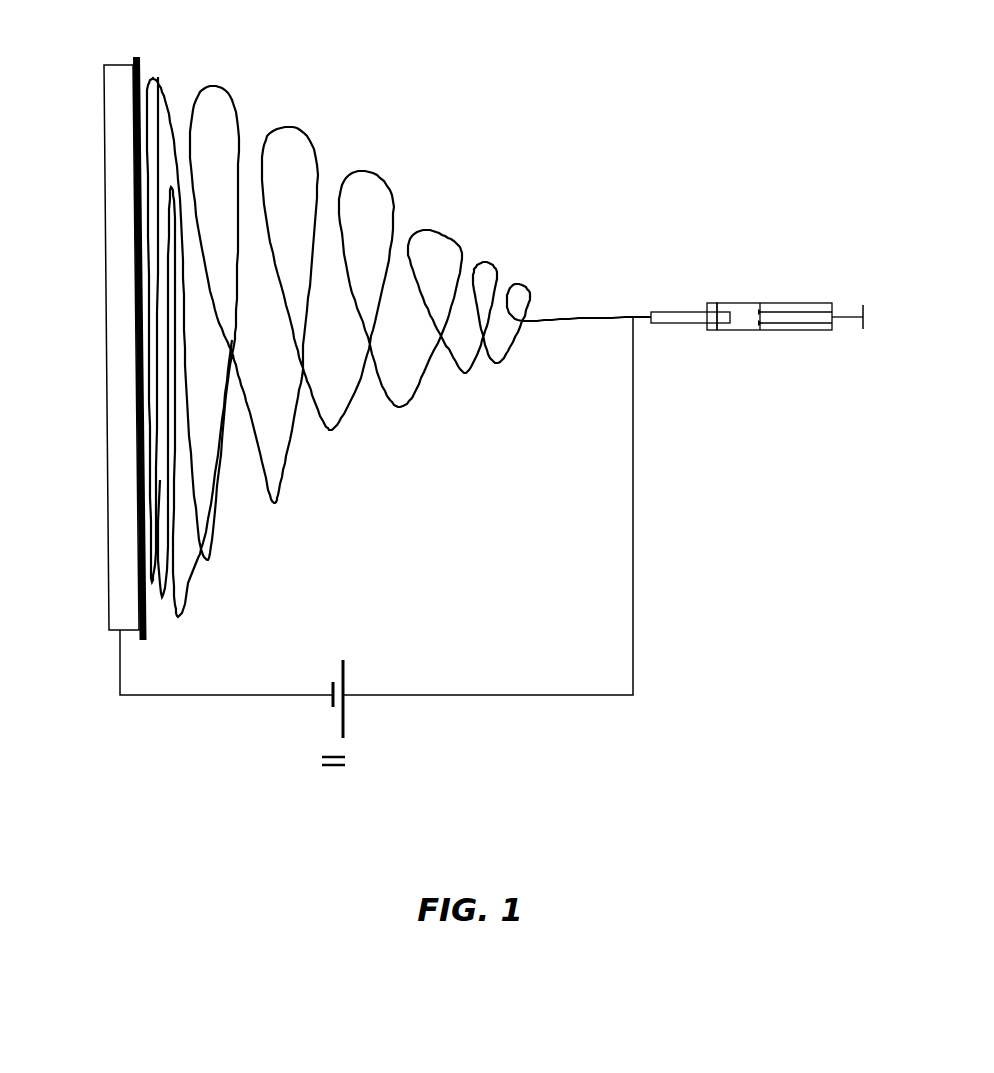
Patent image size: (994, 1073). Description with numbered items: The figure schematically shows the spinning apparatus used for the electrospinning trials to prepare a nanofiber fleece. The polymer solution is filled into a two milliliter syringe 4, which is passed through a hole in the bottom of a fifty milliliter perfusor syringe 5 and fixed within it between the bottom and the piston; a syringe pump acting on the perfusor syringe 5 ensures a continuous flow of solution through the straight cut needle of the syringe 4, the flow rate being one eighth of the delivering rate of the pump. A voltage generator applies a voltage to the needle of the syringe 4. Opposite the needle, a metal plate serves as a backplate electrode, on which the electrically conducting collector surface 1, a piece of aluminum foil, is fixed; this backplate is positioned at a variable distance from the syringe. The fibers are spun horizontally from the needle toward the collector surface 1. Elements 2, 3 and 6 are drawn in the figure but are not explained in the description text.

The collector surface 1 is at (99, 385).
The collector electrode bar 2 is at (190, 328).
The electrospun fiber coil 3 is at (462, 200).
The syringe 4 is at (674, 275).
The perfusor syringe 5 is at (785, 275).
The electrical connection to voltage source 6 is at (432, 541).